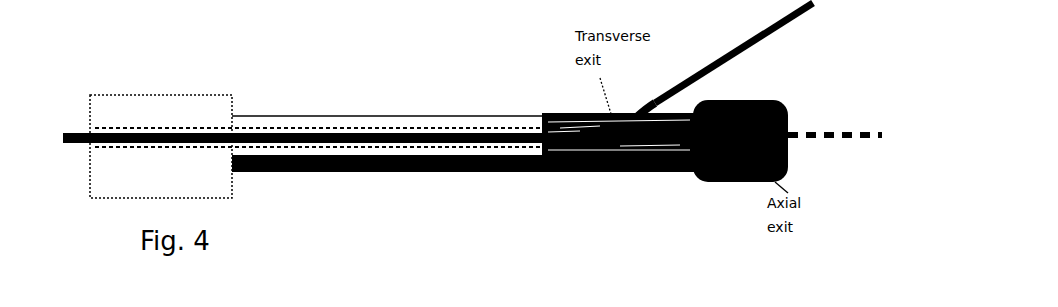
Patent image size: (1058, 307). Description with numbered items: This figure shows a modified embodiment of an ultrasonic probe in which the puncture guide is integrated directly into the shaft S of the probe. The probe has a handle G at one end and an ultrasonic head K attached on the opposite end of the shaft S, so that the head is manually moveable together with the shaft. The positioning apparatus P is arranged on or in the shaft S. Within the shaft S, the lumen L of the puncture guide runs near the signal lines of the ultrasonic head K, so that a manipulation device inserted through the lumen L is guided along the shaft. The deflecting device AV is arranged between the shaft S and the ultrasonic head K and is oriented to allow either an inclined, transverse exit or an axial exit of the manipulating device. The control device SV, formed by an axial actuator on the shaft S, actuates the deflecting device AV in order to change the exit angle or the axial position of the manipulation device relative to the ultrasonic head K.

The handle G is at (173, 107).
The positioning apparatus P is at (298, 94).
The shaft S is at (390, 127).
The lumen L is at (462, 128).
The deflecting device AV is at (545, 120).
The control device SV is at (344, 172).
The ultrasonic head K is at (703, 181).